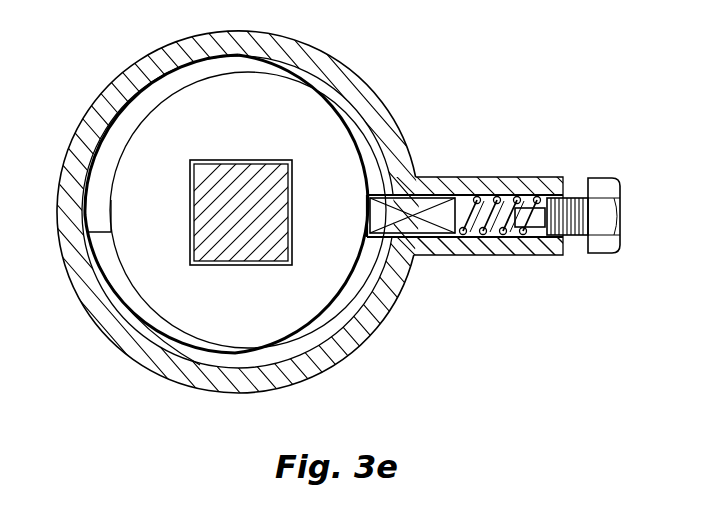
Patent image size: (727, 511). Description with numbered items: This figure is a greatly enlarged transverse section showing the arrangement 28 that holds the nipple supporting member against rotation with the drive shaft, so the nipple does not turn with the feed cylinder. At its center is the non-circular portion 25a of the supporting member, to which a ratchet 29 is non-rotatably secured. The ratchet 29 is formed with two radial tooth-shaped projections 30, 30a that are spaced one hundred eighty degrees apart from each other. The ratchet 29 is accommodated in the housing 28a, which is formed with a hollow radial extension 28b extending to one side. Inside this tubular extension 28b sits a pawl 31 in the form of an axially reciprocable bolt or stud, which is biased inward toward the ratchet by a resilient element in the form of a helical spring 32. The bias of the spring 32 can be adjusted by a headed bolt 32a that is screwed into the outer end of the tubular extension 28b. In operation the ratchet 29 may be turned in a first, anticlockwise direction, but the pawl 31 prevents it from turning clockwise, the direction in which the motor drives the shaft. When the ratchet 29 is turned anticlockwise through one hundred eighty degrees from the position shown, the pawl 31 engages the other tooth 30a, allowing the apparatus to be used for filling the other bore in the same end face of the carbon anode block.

The non-circular portion 25a is at (266, 256).
The arrangement 28 is at (249, 398).
The housing 28a is at (357, 341).
The hollow radial extension 28b is at (507, 179).
The ratchet 29 is at (207, 308).
The tooth-shaped projection 30 is at (385, 187).
The tooth-shaped projection 30a is at (104, 237).
The pawl 31 is at (428, 233).
The helical spring 32 is at (493, 240).
The headed bolt 32a is at (611, 184).